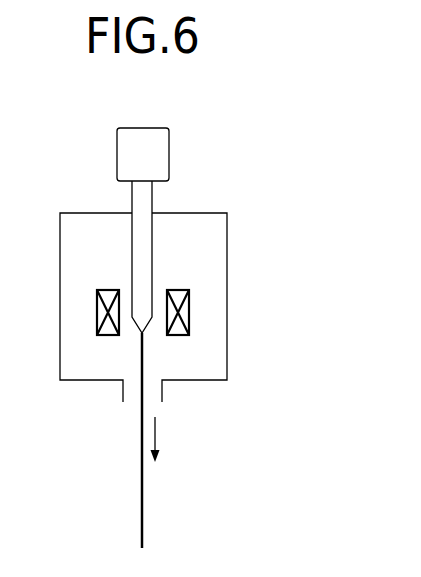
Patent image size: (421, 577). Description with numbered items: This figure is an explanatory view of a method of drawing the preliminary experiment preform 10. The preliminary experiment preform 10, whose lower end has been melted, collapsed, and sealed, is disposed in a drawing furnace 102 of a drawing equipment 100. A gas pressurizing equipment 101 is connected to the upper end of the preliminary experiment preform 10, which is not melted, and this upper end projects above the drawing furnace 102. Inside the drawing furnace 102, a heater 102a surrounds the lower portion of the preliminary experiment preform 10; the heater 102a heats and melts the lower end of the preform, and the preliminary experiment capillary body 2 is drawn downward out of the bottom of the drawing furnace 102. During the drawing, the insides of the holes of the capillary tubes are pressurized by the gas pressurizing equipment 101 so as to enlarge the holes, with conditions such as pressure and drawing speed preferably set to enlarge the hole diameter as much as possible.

The drawing equipment 100 is at (314, 162).
The gas pressurizing equipment 101 is at (169, 150).
The preliminary experiment preform 10 is at (152, 243).
The drawing furnace 102 is at (227, 355).
The heater 102a is at (189, 312).
The preliminary experiment capillary body 2 is at (143, 495).